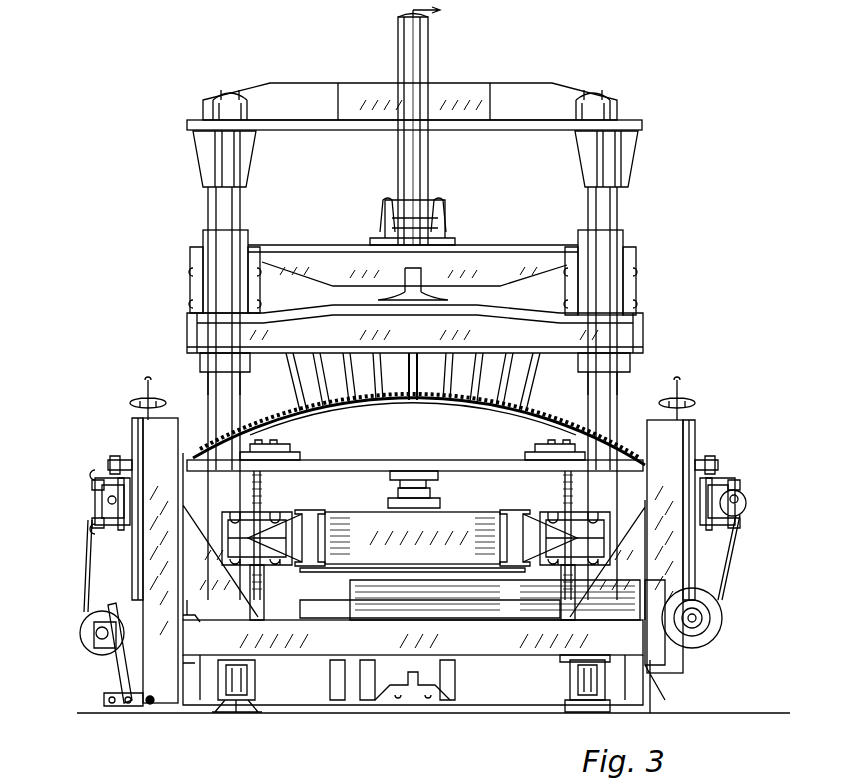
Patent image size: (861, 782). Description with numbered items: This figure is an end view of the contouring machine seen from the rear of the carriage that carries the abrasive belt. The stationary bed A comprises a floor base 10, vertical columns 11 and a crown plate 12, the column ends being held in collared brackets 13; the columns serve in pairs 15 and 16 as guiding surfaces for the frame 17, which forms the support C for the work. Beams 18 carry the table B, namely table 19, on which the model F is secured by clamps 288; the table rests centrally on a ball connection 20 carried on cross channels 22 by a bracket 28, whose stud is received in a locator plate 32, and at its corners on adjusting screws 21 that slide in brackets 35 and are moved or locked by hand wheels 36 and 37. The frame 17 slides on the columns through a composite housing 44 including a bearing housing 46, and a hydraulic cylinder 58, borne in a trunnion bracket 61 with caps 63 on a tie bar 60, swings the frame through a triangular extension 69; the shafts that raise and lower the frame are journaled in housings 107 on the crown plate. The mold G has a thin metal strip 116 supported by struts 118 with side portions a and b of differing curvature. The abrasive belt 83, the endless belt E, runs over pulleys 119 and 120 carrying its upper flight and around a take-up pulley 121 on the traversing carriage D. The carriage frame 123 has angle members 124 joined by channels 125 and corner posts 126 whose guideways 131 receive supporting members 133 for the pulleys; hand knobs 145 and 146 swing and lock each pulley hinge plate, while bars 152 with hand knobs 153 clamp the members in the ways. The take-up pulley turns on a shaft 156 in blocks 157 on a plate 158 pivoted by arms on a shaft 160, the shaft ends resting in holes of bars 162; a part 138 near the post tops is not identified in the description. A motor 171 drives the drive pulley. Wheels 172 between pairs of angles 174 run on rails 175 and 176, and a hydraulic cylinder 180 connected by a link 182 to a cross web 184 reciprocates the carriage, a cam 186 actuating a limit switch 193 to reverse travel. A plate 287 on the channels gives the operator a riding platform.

The floor base 10 is at (462, 25).
The columns 11 is at (218, 208).
The crown plate 12 is at (512, 100).
The collared brackets 13 is at (375, 193).
The pair of columns 15 is at (254, 218).
The pair of columns 16 is at (636, 199).
The frame 17 is at (222, 336).
The beams 18 is at (312, 510).
The table 19 is at (480, 472).
The ball connection 20 is at (431, 490).
The adjusting screws 21 is at (270, 492).
The cross channels 22 is at (340, 520).
The bracket 28 is at (441, 502).
The locator plate 32 is at (401, 471).
The brackets 35 is at (530, 540).
The hand wheel 36 is at (264, 520).
The hand wheel 37 is at (262, 570).
The composite housing 44 is at (210, 266).
The bearing housing 46 is at (210, 286).
The hydraulic cylinder 58 is at (429, 160).
The tie bar 60 is at (512, 262).
The trunnion support bracket 61 is at (446, 226).
The caps 63 is at (382, 204).
The triangular extension 69 is at (448, 294).
The abrasive belt 83 is at (86, 566).
The housing 107 is at (216, 94).
The thin metal strip 116 is at (430, 404).
The struts 118 is at (308, 388).
The pulley 119 is at (94, 503).
The pulley 120 is at (746, 504).
The take-up pulley 121 is at (84, 643).
The carriage frame 123 is at (300, 640).
The angle members 124 is at (200, 618).
The channels 125 is at (515, 640).
The corner posts 126 is at (168, 434).
The guideways 131 is at (136, 426).
The supporting member 133 is at (121, 531).
The hand wheel 138 is at (148, 398).
The hand knob 145 is at (92, 487).
The hand knob 146 is at (96, 526).
The bars 152 is at (134, 459).
The hand knobs 153 is at (110, 465).
The shaft 156 is at (100, 640).
The blocks 157 is at (108, 655).
The plate 158 is at (120, 686).
The shaft 160 is at (151, 706).
The bars 162 is at (120, 707).
The motor 171 is at (718, 632).
The wheels 172 is at (232, 702).
The angles 174 is at (586, 658).
The rail 175 is at (245, 713).
The rail 176 is at (582, 713).
The hydraulic cylinder 180 is at (432, 696).
The link 182 is at (412, 690).
The cross web 184 is at (378, 690).
The cam 186 is at (352, 696).
The limit switch 193 is at (337, 702).
The plate 287 is at (488, 622).
The clamps 288 is at (290, 452).
The stationary bed A is at (325, 92).
The table B is at (477, 461).
The support for the work C is at (227, 346).
The traversing carriage D is at (115, 418).
The endless belt E is at (194, 450).
The model F is at (312, 431).
The mold G is at (300, 378).
The side portion a is at (400, 392).
The side portion b is at (393, 401).